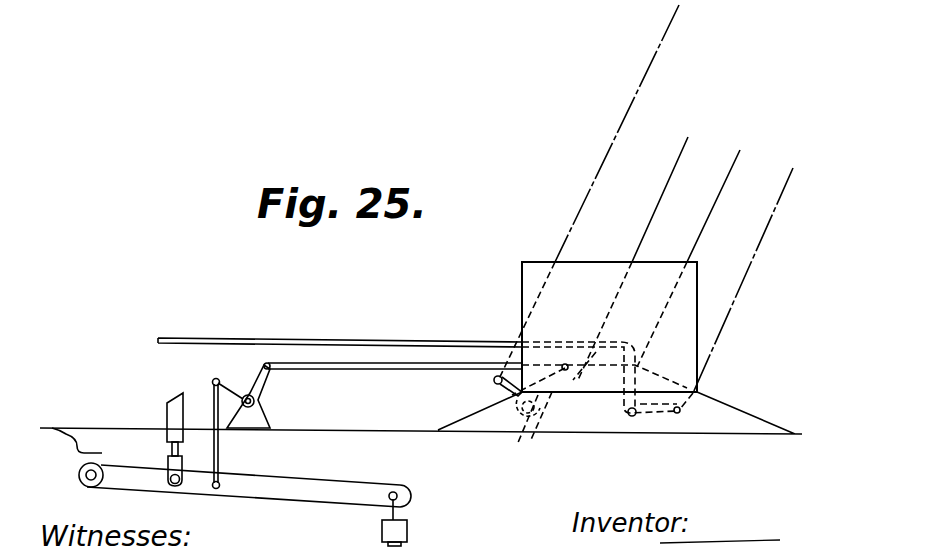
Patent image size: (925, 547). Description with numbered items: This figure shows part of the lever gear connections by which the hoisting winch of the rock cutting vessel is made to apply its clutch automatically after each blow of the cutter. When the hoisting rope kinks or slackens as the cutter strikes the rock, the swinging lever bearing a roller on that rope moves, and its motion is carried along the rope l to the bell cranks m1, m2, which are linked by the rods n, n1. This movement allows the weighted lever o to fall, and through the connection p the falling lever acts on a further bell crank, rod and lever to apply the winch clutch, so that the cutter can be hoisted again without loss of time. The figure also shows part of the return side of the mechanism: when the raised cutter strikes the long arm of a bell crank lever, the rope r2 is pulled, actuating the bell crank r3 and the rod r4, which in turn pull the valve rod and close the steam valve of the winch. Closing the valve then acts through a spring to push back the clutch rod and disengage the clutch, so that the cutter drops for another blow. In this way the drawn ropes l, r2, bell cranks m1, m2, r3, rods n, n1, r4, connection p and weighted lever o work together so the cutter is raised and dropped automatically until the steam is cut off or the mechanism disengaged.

The rope l is at (641, 85).
The rope r2 is at (735, 289).
The rod r4 is at (374, 343).
The rod n is at (427, 369).
The bell crank m2 is at (244, 396).
The rod n1 is at (218, 452).
The connection p is at (167, 412).
The weighted lever o is at (275, 487).
The bell crank m1 is at (510, 430).
The bell crank r3 is at (645, 418).